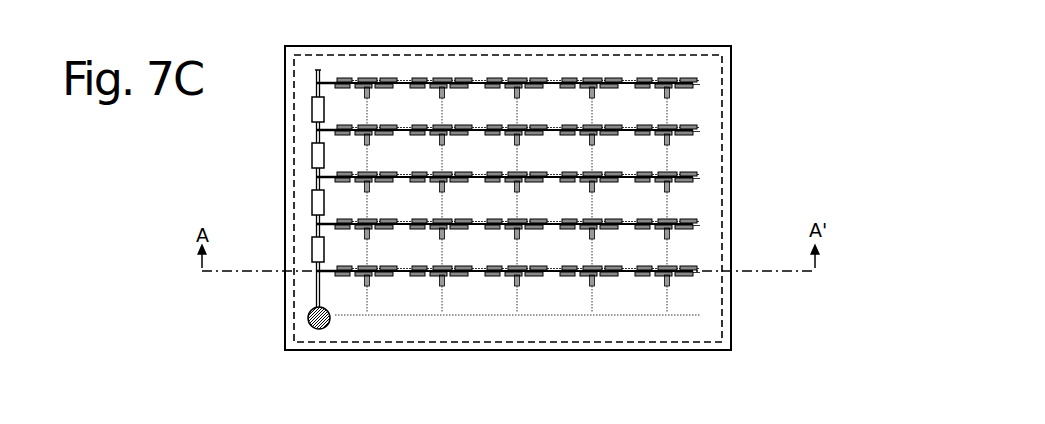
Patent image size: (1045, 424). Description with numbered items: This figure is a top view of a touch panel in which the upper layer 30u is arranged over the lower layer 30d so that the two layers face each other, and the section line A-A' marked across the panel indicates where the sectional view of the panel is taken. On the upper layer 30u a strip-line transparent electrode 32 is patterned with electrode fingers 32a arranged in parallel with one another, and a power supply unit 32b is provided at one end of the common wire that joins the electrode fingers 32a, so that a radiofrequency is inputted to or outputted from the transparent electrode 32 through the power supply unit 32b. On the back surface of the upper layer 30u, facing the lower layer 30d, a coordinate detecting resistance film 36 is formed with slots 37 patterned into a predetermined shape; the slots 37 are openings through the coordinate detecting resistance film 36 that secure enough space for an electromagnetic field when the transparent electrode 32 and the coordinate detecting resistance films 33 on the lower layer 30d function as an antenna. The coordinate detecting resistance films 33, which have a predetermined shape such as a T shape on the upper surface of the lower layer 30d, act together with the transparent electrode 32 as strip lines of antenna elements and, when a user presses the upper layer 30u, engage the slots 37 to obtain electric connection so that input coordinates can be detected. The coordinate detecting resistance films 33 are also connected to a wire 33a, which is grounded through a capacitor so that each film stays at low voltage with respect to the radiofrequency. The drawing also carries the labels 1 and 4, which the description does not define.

The upper layer 30u is at (503, 204).
The lower layer 30d is at (503, 204).
The transparent electrode 32 is at (556, 82).
The coordinate detecting resistance films 33 is at (672, 100).
The slots 37 is at (688, 168).
The coordinate detecting resistance film 36 is at (724, 207).
The substrate 1 is at (550, 198).
The substrate 4 is at (728, 316).
The power supply unit 32b is at (320, 161).
The electrode fingers 32a is at (316, 327).
The wire 33a is at (485, 353).